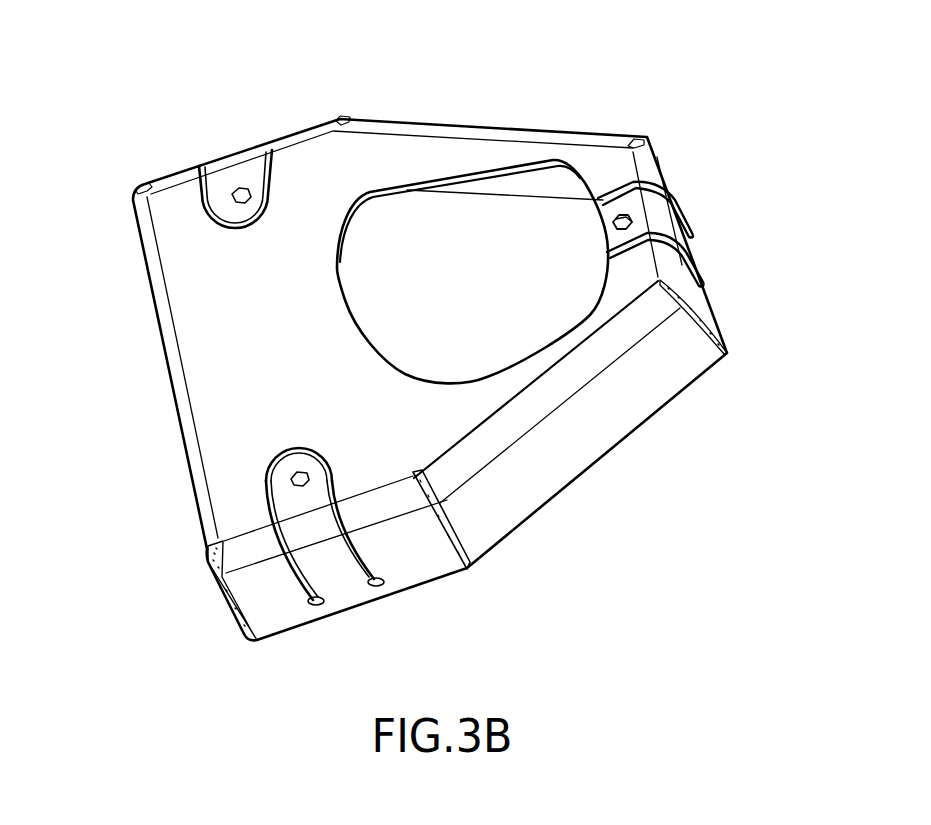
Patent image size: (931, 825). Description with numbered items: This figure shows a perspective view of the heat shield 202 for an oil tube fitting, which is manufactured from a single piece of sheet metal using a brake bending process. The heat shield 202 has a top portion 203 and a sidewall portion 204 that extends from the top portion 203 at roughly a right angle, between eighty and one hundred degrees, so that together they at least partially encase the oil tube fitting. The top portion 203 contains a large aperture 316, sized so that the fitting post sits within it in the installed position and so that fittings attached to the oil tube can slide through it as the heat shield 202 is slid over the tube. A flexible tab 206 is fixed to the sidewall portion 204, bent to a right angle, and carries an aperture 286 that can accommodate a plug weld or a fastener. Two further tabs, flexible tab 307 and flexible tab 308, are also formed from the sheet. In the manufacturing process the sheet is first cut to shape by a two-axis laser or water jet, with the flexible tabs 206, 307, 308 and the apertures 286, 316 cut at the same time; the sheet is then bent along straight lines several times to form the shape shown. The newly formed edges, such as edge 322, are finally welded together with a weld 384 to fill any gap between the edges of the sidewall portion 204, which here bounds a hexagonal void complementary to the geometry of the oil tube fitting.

The heat shield 202 is at (373, 148).
The top portion 203 is at (200, 338).
The sidewall portion 204 is at (665, 384).
The flexible tab 206 is at (655, 208).
The aperture 286 is at (622, 221).
The flexible tab 307 is at (245, 177).
The flexible tab 308 is at (302, 527).
The aperture 316 is at (350, 228).
The edge 322 is at (466, 546).
The weld 384 is at (463, 563).